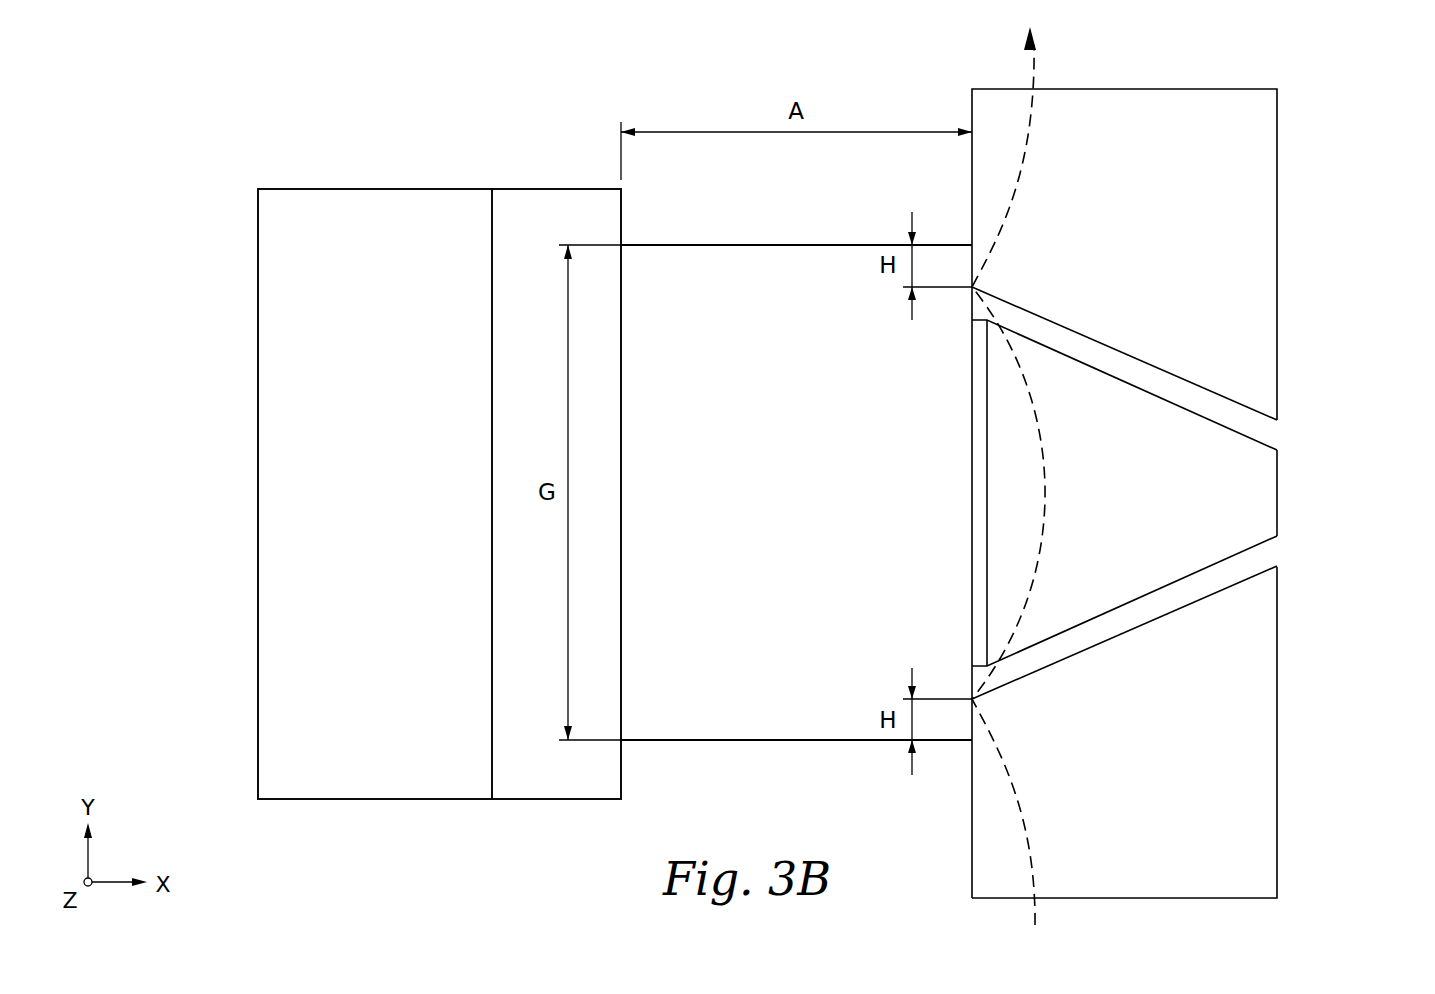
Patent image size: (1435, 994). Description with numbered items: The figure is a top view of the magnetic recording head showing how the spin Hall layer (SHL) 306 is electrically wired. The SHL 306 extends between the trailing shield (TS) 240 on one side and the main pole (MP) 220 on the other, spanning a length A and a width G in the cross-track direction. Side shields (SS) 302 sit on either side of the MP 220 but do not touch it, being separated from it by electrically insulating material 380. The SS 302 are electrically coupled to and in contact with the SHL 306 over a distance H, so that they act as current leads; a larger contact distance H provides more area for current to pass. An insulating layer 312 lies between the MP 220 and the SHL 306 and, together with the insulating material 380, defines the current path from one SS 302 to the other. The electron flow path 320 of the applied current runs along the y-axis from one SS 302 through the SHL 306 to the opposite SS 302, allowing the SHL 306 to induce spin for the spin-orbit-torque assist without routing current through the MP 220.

The trailing shield (TS) 240 is at (356, 517).
The spin Hall layer (SHL) 306 is at (783, 517).
The side shield (SS) 302 is at (1110, 798).
The electrically insulating material 380 is at (1117, 360).
The main pole (MP) 220 is at (1110, 493).
The insulating layer 312 is at (978, 612).
The electron flow path 320 is at (1033, 63).